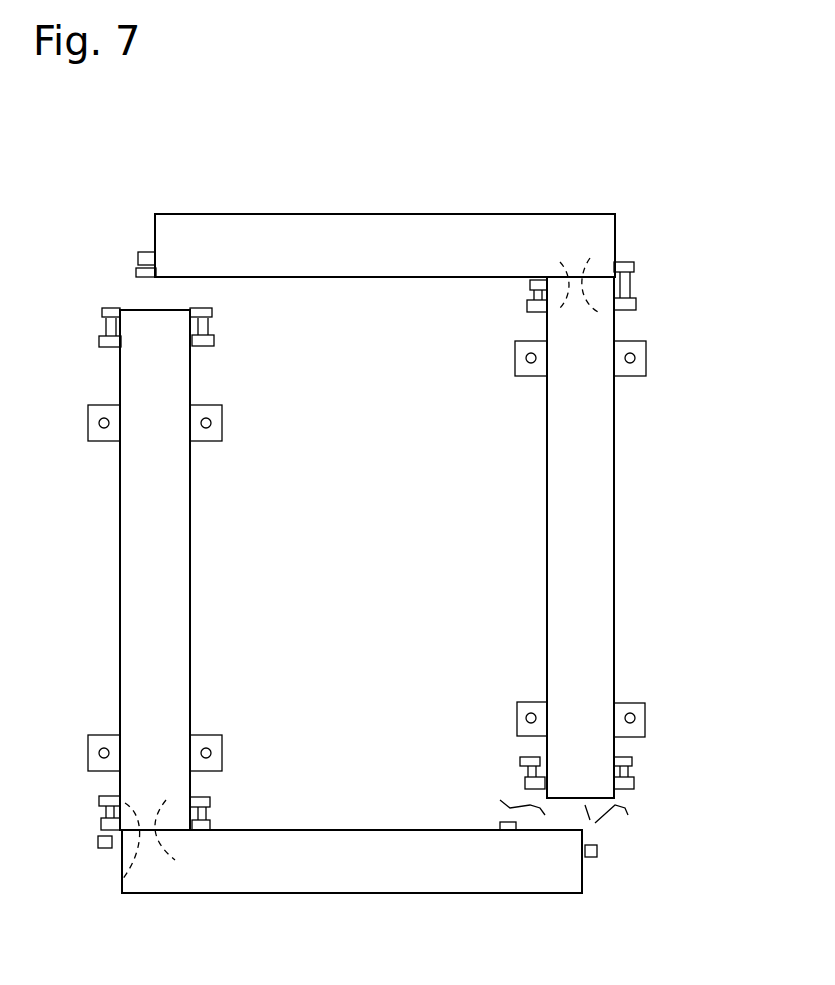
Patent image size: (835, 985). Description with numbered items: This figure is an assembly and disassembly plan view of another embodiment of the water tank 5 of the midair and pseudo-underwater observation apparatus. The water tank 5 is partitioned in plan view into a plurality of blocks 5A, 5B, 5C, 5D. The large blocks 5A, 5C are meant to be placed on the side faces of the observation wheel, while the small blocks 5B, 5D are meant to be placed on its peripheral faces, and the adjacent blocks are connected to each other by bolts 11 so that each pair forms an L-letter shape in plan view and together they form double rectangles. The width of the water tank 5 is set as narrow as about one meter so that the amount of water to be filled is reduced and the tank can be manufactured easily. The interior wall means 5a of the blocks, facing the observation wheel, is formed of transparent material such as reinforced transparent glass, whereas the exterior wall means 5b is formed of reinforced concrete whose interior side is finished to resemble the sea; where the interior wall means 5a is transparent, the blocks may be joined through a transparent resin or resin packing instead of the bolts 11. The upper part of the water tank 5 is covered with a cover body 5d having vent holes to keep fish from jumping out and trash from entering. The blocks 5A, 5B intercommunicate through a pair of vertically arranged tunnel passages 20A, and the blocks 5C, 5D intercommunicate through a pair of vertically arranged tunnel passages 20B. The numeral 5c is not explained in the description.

The water tank 5 is at (627, 186).
The large block 5A is at (614, 560).
The small block 5B is at (432, 213).
The large block 5C is at (120, 550).
The small block 5D is at (372, 893).
The interior wall means 5a is at (190, 622).
The exterior wall means 5b is at (306, 213).
The recess of frame member 5c is at (594, 460).
The cover body 5d is at (590, 428).
The bolt 11 is at (155, 275).
The tunnel passage 20A is at (609, 242).
The tunnel passage 20B is at (135, 858).